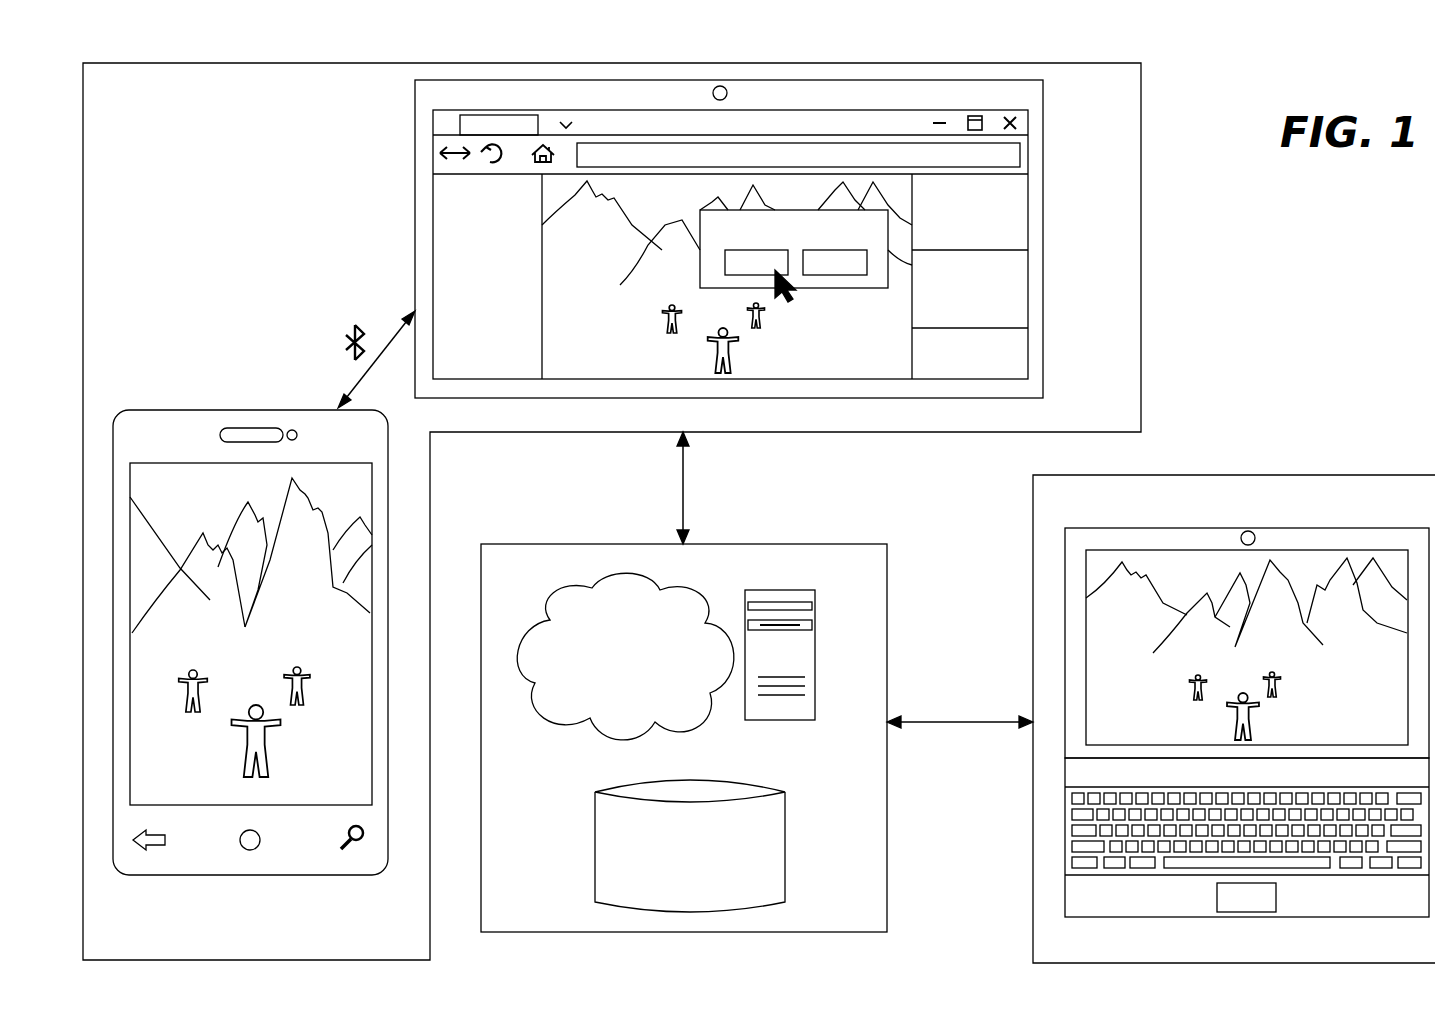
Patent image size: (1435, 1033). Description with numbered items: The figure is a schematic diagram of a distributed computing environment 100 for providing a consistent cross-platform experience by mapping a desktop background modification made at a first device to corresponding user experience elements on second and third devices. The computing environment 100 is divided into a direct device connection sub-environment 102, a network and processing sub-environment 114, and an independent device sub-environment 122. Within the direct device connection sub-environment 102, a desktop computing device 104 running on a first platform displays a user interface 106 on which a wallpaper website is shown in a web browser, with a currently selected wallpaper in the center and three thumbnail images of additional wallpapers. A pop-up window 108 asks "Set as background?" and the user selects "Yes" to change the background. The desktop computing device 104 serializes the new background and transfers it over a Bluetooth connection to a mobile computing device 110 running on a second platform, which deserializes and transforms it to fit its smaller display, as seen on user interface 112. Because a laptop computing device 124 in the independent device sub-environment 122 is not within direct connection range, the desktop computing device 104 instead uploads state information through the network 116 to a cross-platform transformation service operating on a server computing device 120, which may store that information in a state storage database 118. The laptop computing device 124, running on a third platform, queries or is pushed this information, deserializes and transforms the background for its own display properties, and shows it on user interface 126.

The distributed computing environment 100 is at (1286, 265).
The direct device connection sub-environment 102 is at (612, 511).
The desktop computing device 104 is at (415, 218).
The user interface 106 is at (895, 343).
The pop-up window 108 is at (880, 270).
The mobile computing device 110 is at (125, 877).
The user interface 112 is at (183, 485).
The network and processing sub-environment 114 is at (684, 738).
The network 116 is at (625, 656).
The state storage database 118 is at (690, 846).
The server computing device 120 is at (745, 590).
The independent device sub-environment 122 is at (1234, 719).
The laptop computing device 124 is at (1065, 918).
The user interface 126 is at (1155, 603).